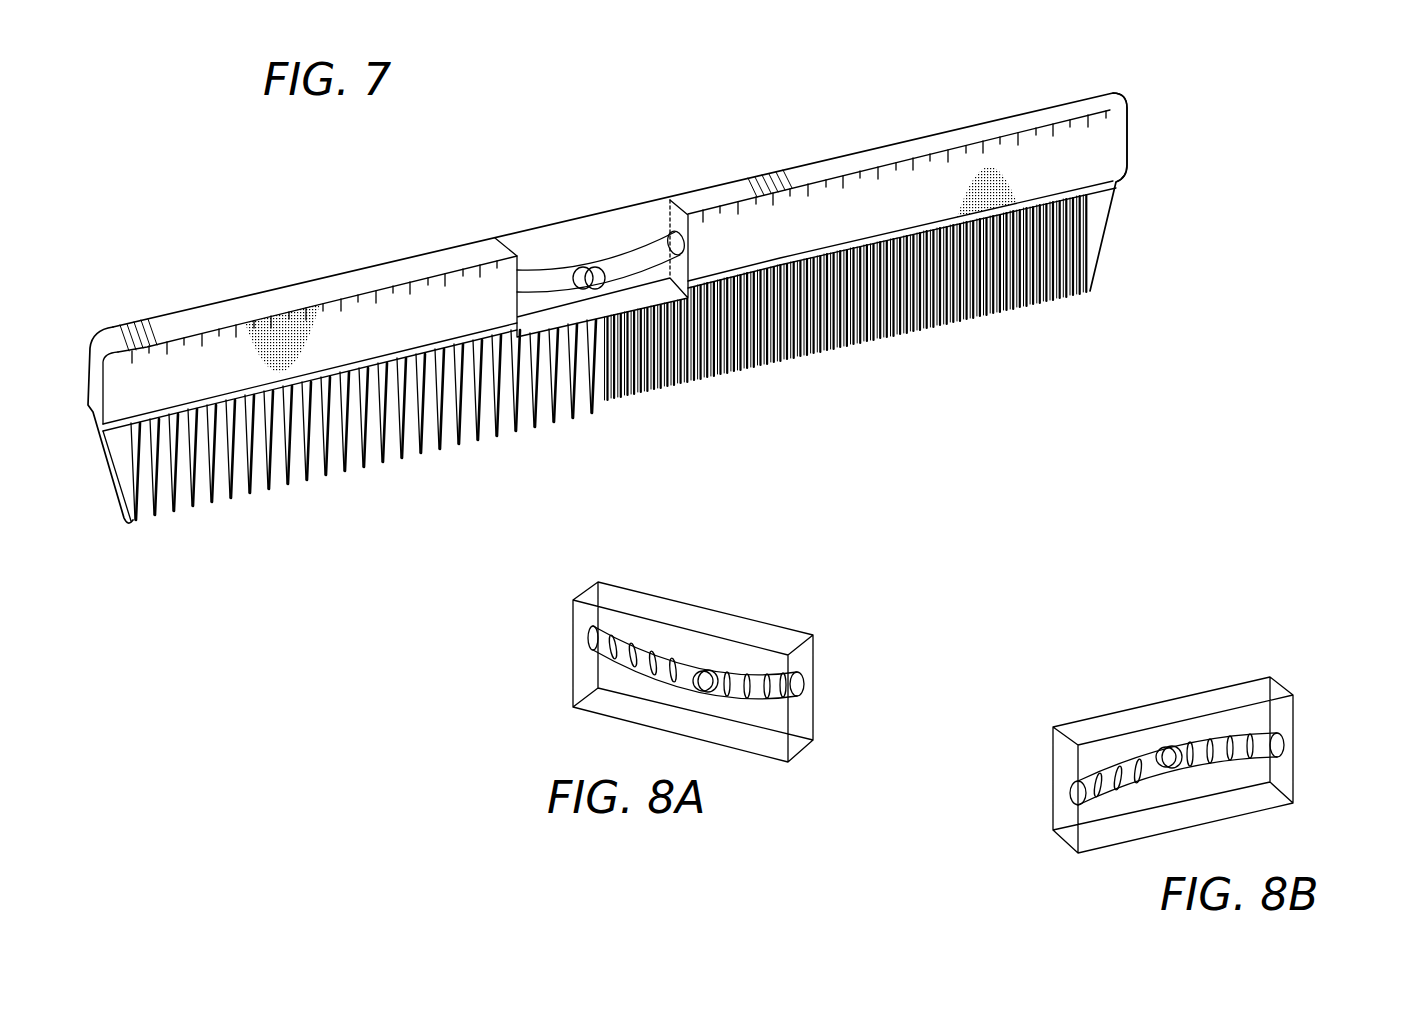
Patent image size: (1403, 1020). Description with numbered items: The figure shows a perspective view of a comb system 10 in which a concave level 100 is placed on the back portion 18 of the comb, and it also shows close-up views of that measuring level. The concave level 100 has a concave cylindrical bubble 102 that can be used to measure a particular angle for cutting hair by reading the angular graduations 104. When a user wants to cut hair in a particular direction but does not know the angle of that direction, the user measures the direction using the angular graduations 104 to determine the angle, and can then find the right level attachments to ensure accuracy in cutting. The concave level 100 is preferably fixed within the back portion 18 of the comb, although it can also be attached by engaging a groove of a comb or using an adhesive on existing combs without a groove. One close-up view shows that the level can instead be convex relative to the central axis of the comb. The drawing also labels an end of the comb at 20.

In FIG. 7, the comb system 10 is at (320, 222).
In FIG. 7, the back portion 18 is at (857, 160).
In FIG. 7, the comb end 20 is at (1117, 183).
In FIG. 7, the concave level 100 is at (626, 194).
In FIG. 8A, the concave level 100 is at (790, 575).
In FIG. 8B, the concave level 100 is at (1100, 665).
In FIG. 7, the concave cylindrical bubble 102 is at (590, 267).
In FIG. 8A, the concave cylindrical bubble 102 is at (705, 678).
In FIG. 8B, the concave cylindrical bubble 102 is at (1170, 755).
In FIG. 8A, the angular graduations 104 is at (630, 658).
In FIG. 8B, the angular graduations 104 is at (1243, 740).